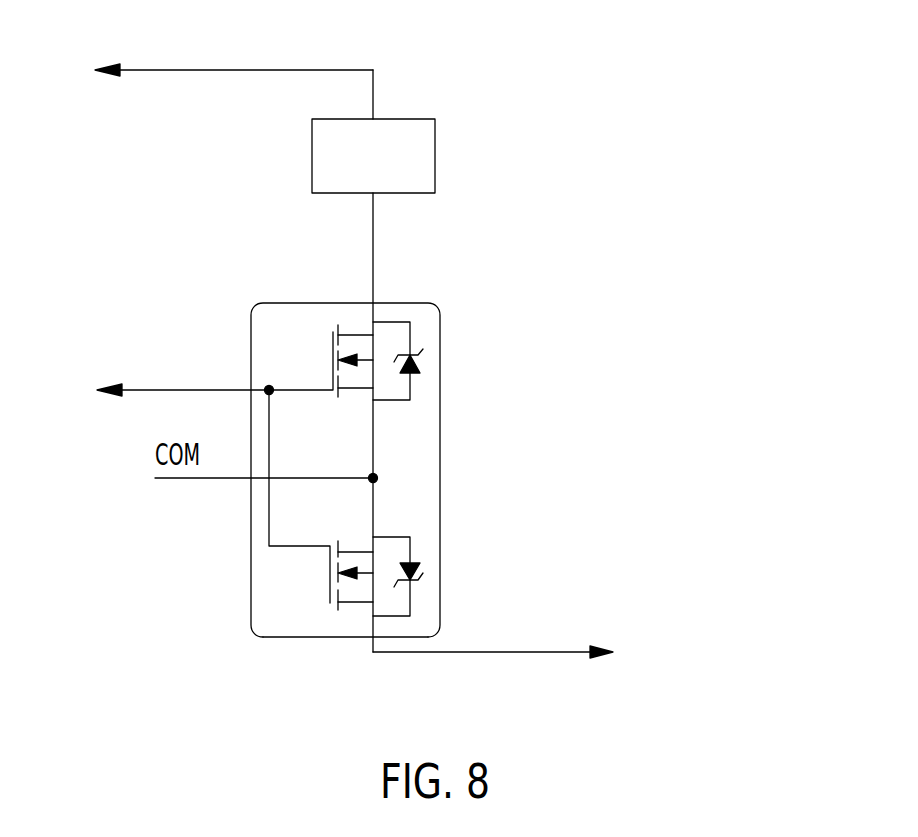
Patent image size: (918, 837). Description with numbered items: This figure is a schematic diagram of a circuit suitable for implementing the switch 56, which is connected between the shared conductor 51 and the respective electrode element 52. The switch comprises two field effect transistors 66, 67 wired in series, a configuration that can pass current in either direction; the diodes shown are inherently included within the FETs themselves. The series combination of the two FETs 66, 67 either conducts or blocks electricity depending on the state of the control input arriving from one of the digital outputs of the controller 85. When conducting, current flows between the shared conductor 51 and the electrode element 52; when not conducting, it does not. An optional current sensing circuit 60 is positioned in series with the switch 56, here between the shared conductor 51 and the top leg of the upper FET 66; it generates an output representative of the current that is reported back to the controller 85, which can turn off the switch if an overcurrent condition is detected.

The shared conductor 51 is at (218, 38).
The current sensing circuit 60 is at (408, 118).
The field effect transistor 66 is at (315, 292).
The field effect transistor 67 is at (328, 650).
The switch 56 is at (408, 301).
The controller 85 is at (166, 355).
The electrode element 52 is at (591, 638).